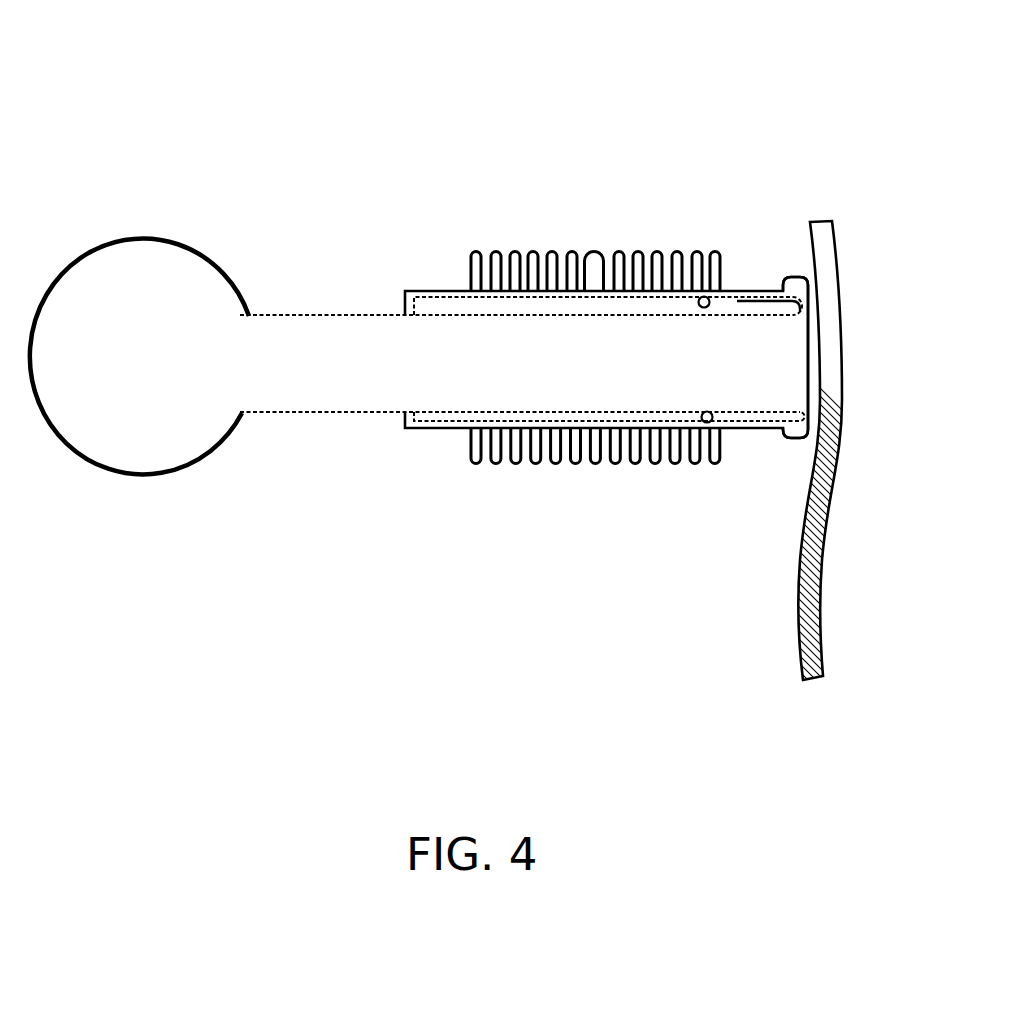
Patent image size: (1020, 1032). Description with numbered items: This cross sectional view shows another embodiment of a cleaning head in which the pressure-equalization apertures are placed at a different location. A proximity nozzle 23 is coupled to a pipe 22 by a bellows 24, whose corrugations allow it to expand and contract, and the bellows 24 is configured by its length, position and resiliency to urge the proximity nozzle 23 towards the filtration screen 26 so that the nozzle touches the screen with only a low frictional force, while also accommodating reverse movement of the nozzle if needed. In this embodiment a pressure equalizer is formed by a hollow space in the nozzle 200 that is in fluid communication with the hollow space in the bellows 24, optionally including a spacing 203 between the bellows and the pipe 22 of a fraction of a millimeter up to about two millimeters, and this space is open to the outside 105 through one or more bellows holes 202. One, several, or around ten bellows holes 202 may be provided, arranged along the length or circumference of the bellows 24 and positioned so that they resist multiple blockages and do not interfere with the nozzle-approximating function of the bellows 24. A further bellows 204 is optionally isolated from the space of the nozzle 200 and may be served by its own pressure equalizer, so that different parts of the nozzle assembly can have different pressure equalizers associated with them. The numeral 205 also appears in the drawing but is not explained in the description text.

The pipe 22 is at (360, 415).
The proximity nozzle 23 is at (794, 278).
The bellows 24 is at (497, 455).
The filtration screen 26 is at (798, 547).
The outside 105 is at (678, 243).
The nozzle 200 is at (738, 300).
The bellows hole 202 is at (702, 420).
The spacing 203 is at (557, 300).
The bellows 204 is at (443, 292).
The knob 205 is at (268, 420).